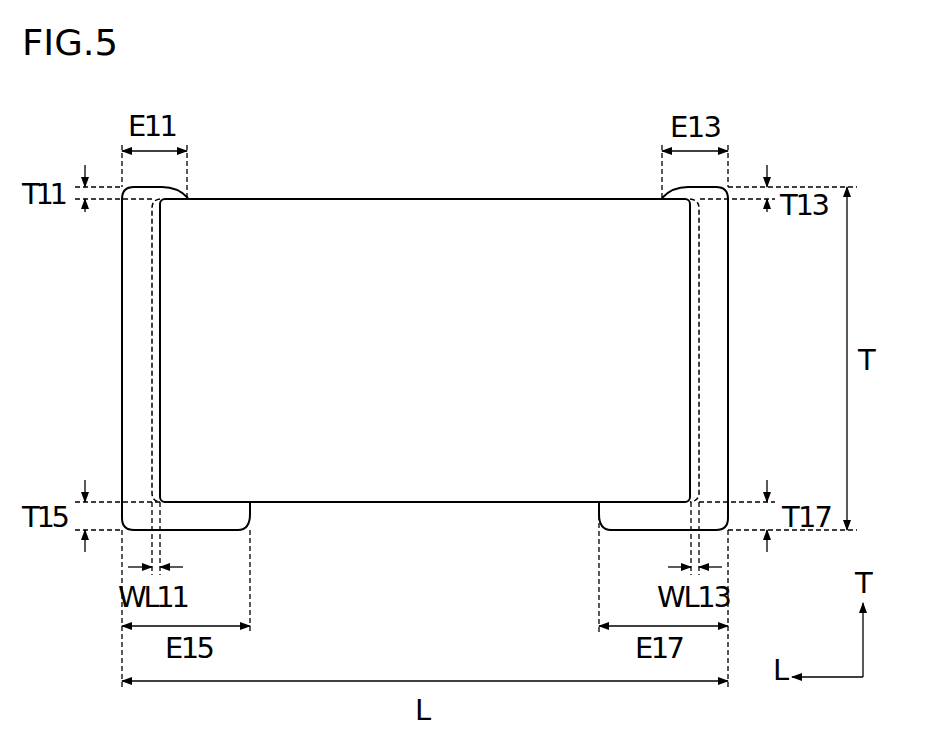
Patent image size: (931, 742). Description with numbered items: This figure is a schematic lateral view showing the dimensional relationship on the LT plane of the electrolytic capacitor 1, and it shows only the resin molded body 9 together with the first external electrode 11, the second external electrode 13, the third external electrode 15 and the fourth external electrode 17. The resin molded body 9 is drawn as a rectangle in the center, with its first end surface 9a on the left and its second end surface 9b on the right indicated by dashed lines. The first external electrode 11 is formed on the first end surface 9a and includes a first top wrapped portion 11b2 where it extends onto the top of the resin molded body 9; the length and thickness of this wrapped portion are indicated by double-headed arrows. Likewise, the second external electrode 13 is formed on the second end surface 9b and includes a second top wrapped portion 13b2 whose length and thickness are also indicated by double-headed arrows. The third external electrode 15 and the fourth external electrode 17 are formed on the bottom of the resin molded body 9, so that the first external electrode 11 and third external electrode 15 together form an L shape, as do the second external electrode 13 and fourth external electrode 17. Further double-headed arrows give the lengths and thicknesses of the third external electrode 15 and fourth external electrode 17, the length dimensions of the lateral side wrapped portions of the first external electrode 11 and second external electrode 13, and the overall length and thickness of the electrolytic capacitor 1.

The electrolytic capacitor 1 is at (426, 326).
The resin molded body 9 is at (425, 309).
The first end surface 9a is at (150, 275).
The second end surface 9b is at (700, 275).
The first external electrode 11 is at (150, 318).
The first top wrapped portion 11b2 is at (158, 199).
The second external electrode 13 is at (705, 318).
The second top wrapped portion 13b2 is at (692, 199).
The third external electrode 15 is at (210, 520).
The fourth external electrode 17 is at (640, 520).